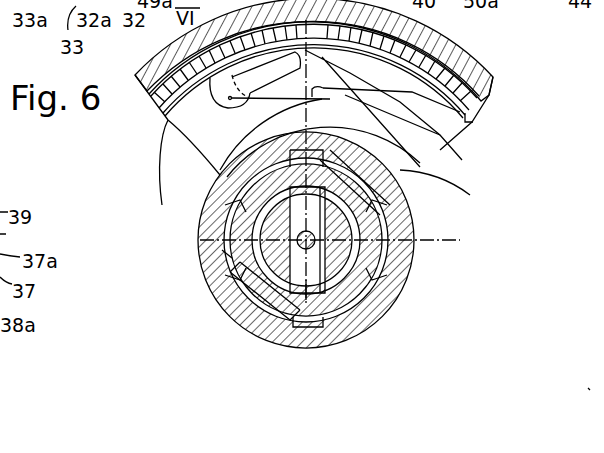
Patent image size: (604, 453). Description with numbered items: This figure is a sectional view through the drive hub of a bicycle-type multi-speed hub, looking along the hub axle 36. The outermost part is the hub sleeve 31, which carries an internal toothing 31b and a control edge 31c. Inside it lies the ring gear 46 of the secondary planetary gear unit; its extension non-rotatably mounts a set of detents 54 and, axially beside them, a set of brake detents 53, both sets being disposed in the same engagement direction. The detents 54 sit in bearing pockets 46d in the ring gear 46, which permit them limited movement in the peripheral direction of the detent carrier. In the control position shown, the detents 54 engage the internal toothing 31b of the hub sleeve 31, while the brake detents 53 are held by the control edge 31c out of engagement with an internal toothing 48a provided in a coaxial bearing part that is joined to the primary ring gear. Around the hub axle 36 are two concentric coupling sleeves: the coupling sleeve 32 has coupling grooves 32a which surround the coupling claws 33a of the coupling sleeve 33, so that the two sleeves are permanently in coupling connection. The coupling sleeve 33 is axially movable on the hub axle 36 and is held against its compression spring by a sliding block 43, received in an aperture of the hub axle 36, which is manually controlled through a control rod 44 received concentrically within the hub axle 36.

The hub sleeve 31 is at (472, 62).
The internal toothing 31b is at (488, 92).
The control edge 31c is at (198, 236).
The coupling sleeve 32 is at (400, 217).
The coupling grooves 32a is at (400, 257).
The coupling sleeve 33 is at (400, 303).
The coupling claws 33a is at (400, 277).
The hub axle 36 is at (230, 258).
The sliding block 43 is at (316, 290).
The control rod 44 is at (238, 318).
The ring gear 46 is at (453, 153).
The bearing pockets 46d is at (417, 138).
The internal toothing 48a is at (480, 117).
The detents 53 is at (407, 180).
The detents 54 is at (455, 137).